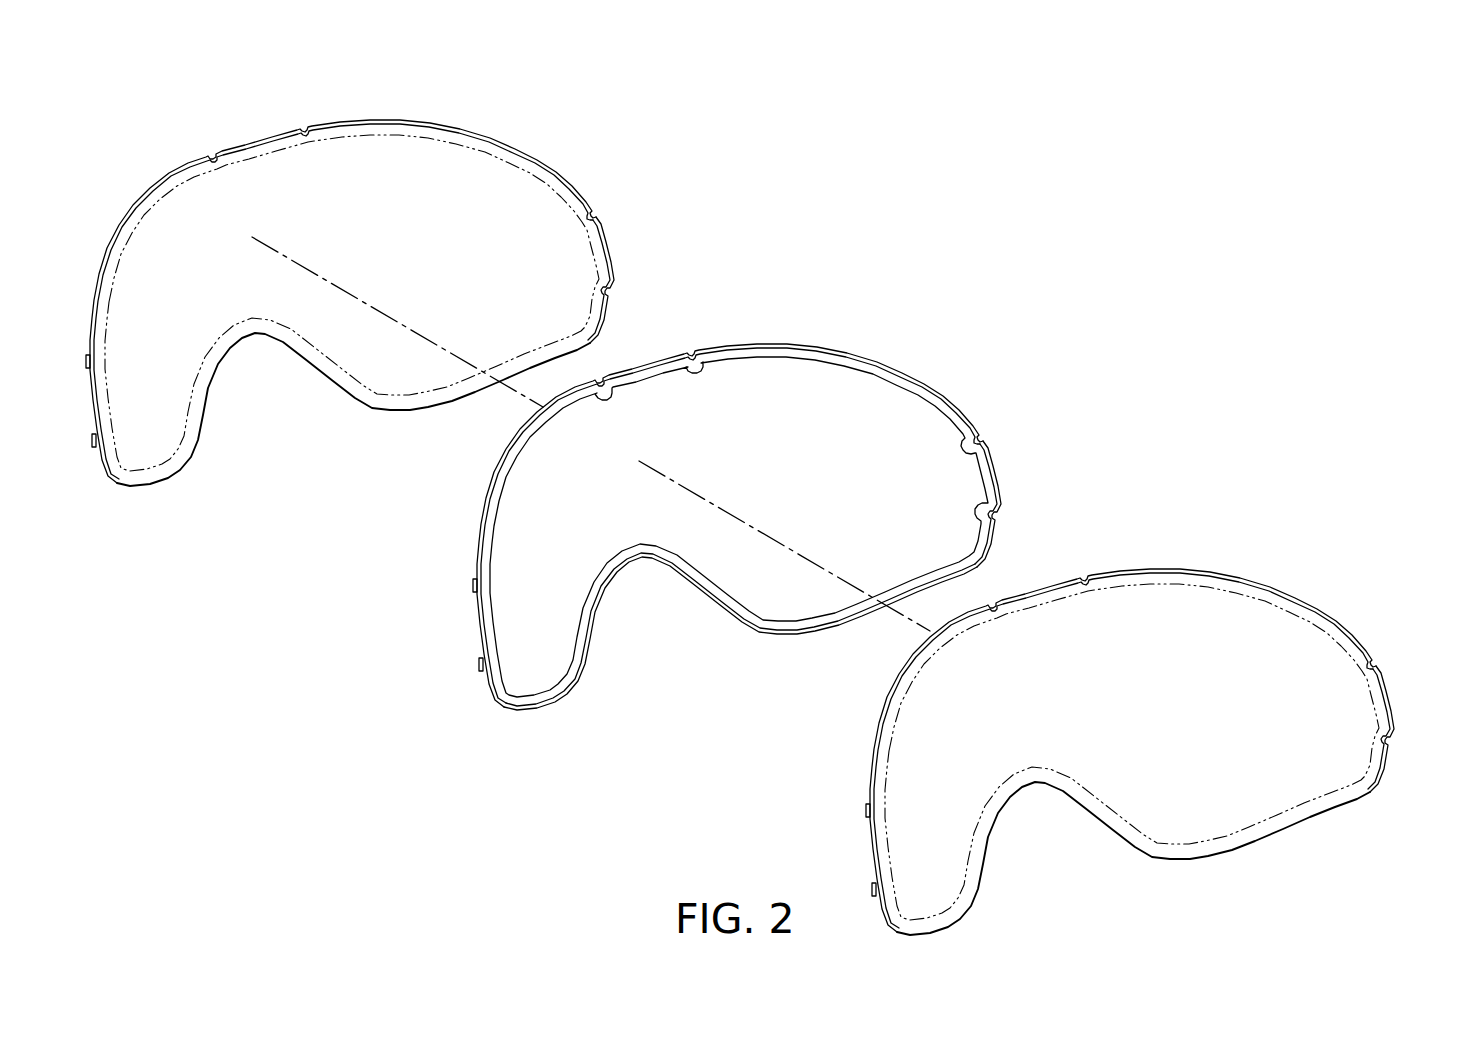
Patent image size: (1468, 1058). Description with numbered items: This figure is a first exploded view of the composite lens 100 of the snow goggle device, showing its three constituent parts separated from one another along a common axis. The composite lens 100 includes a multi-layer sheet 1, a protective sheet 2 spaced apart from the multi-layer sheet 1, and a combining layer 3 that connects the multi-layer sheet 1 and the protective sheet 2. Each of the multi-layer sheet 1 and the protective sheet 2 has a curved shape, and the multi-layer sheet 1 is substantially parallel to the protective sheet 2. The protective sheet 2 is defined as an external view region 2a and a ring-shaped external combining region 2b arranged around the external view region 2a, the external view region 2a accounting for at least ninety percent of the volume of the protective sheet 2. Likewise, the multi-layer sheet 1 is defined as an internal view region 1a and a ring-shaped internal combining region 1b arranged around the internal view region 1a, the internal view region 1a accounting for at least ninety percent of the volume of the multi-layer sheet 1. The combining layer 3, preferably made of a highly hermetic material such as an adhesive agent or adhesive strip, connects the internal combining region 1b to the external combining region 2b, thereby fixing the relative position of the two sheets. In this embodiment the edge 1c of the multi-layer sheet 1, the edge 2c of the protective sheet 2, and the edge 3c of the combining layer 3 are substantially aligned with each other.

The composite lens 100 is at (1312, 223).
The multi-layer sheet 1 is at (1157, 724).
The internal view region 1a is at (1395, 729).
The internal combining region 1b is at (1136, 858).
The edge of the multi-layer sheet 1c is at (1123, 723).
The protective sheet 2 is at (378, 275).
The external view region 2a is at (568, 252).
The external combining region 2b is at (417, 403).
The edge of the protective sheet 2c is at (500, 142).
The combining layer 3 is at (747, 497).
The edge of the combining layer 3c is at (730, 495).